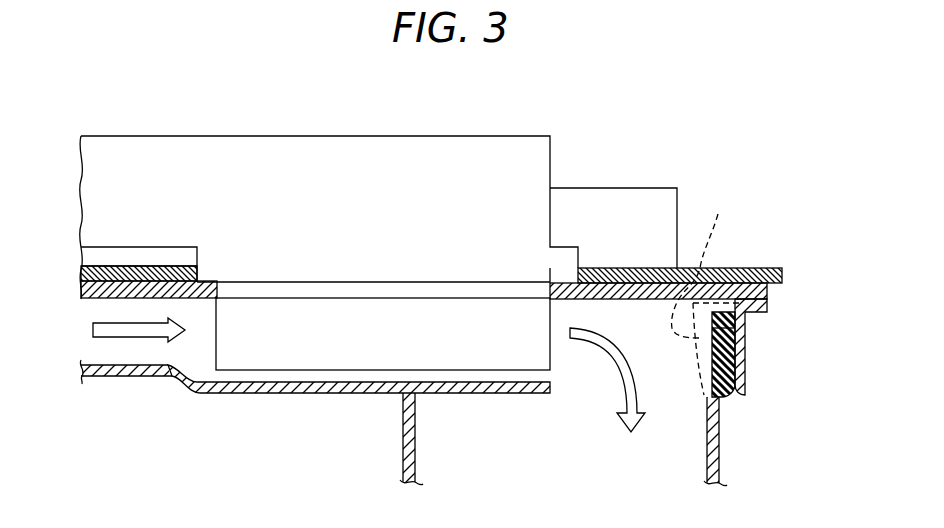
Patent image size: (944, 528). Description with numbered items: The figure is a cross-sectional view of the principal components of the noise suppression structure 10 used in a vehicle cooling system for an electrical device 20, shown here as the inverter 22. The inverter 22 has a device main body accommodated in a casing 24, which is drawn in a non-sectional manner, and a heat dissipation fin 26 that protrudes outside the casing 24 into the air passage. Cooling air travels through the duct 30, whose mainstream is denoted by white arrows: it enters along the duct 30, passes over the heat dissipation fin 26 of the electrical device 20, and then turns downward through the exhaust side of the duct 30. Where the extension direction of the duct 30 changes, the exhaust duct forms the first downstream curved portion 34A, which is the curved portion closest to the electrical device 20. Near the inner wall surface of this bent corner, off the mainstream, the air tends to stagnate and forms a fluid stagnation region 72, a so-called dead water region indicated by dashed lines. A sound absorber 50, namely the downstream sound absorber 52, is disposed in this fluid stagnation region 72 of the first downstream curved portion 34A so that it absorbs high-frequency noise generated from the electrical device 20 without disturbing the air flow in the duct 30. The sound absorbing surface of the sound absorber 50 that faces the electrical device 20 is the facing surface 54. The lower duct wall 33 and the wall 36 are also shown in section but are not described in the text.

The noise suppression structure 10 is at (671, 147).
The electrical device 20 is at (431, 178).
The inverter 22 is at (387, 135).
The casing 24 is at (256, 136).
The heat dissipation fin 26 is at (280, 346).
The duct 30 is at (348, 397).
The inlet plate 33 is at (122, 377).
The fin 36 is at (403, 448).
The fluid stagnation region 72 is at (707, 292).
The facing surface 54 is at (730, 338).
The sound absorber 50 is at (768, 358).
The downstream sound absorber 52 is at (733, 350).
The first downstream curved portion 34A is at (738, 397).